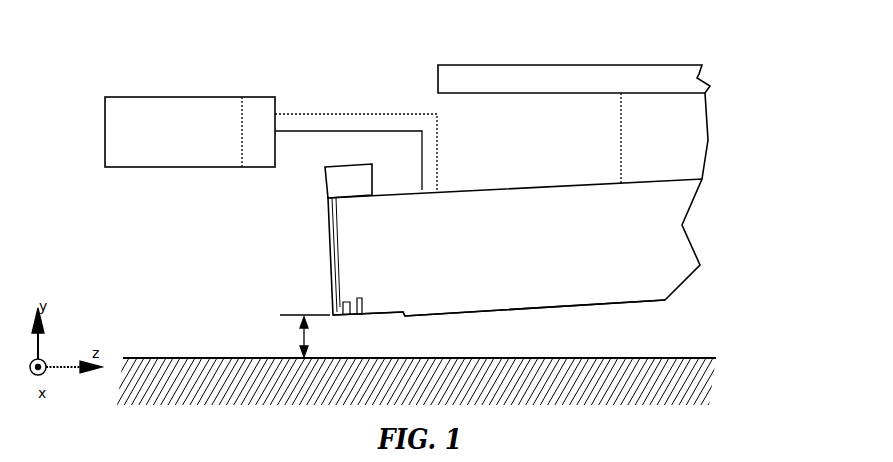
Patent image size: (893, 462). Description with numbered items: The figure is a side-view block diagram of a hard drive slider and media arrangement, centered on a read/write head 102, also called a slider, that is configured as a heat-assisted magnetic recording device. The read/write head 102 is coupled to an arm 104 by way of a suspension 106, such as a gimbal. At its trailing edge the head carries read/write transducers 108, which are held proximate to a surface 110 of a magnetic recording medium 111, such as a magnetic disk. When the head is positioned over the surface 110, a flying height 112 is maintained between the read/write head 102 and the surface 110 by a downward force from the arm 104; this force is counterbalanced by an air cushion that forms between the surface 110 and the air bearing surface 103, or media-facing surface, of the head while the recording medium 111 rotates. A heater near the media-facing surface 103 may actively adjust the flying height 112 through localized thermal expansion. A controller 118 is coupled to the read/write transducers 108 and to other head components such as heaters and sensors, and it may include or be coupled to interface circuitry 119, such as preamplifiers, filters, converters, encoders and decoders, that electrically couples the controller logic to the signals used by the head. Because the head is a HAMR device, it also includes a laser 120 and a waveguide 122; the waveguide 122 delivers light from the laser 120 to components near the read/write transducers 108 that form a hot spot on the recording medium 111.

The read/write head 102 is at (685, 243).
The air bearing surface 103 is at (450, 311).
The arm 104 is at (670, 63).
The suspension 106 is at (708, 133).
The read/write transducers 108 is at (343, 300).
The surface 110 is at (697, 358).
The magnetic recording medium 111 is at (617, 393).
The flying height 112 is at (294, 336).
The controller 118 is at (146, 97).
The interface circuitry 119 is at (256, 97).
The laser 120 is at (329, 184).
The waveguide 122 is at (330, 222).